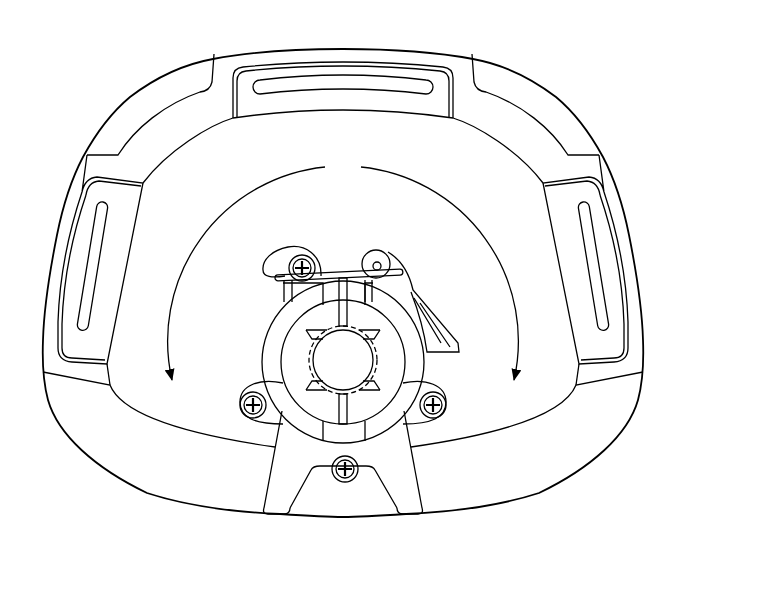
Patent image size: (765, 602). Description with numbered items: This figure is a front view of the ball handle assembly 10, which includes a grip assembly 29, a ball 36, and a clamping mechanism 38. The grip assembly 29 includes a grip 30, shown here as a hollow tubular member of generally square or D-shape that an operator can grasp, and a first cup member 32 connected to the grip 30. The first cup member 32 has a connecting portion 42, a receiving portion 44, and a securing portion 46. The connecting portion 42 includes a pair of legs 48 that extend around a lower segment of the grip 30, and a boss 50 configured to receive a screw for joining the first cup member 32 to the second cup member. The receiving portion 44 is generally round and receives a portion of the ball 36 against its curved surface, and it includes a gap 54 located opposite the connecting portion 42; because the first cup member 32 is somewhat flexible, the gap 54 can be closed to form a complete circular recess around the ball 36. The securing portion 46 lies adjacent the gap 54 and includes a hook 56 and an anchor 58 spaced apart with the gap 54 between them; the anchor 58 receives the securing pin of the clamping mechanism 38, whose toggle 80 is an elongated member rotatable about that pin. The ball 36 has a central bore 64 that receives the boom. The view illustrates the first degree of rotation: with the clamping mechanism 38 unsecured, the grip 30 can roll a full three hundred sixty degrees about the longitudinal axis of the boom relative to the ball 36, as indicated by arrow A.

The ball handle assembly 10 is at (67, 84).
The grip assembly 29 is at (451, 532).
The grip 30 is at (598, 170).
The first cup member 32 is at (282, 482).
The ball 36 is at (394, 363).
The clamping mechanism 38 is at (425, 268).
The connecting portion 42 is at (409, 475).
The receiving portion 44 is at (247, 338).
The securing portion 46 is at (263, 292).
The legs 48 is at (272, 512).
The boss 50 is at (241, 397).
The gap 54 is at (333, 263).
The hook 56 is at (278, 260).
The anchor 58 is at (386, 262).
The central bore 64 is at (358, 371).
The toggle 80 is at (447, 311).